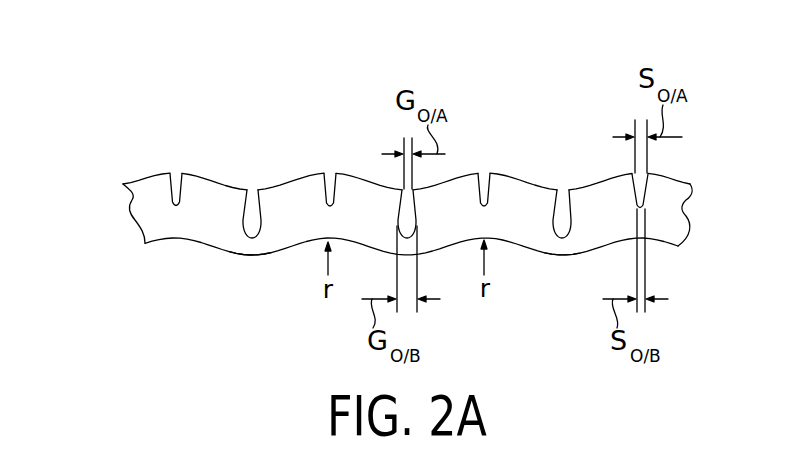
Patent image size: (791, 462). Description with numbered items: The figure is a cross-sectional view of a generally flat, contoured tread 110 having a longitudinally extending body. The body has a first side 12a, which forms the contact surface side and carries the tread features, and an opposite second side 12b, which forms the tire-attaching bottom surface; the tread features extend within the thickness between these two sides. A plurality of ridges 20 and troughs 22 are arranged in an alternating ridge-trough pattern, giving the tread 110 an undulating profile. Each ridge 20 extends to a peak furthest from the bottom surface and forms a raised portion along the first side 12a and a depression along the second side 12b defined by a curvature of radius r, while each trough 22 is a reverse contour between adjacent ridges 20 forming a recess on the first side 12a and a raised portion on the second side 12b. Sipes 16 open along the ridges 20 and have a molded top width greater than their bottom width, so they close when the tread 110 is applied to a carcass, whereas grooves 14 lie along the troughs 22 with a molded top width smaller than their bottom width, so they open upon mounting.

The contoured tread 110 is at (364, 193).
The first side 12a is at (220, 178).
The second side 12b is at (215, 247).
The groove 14 is at (259, 207).
The sipe 16 is at (168, 186).
The ridge 20 is at (329, 150).
The trough 22 is at (252, 277).